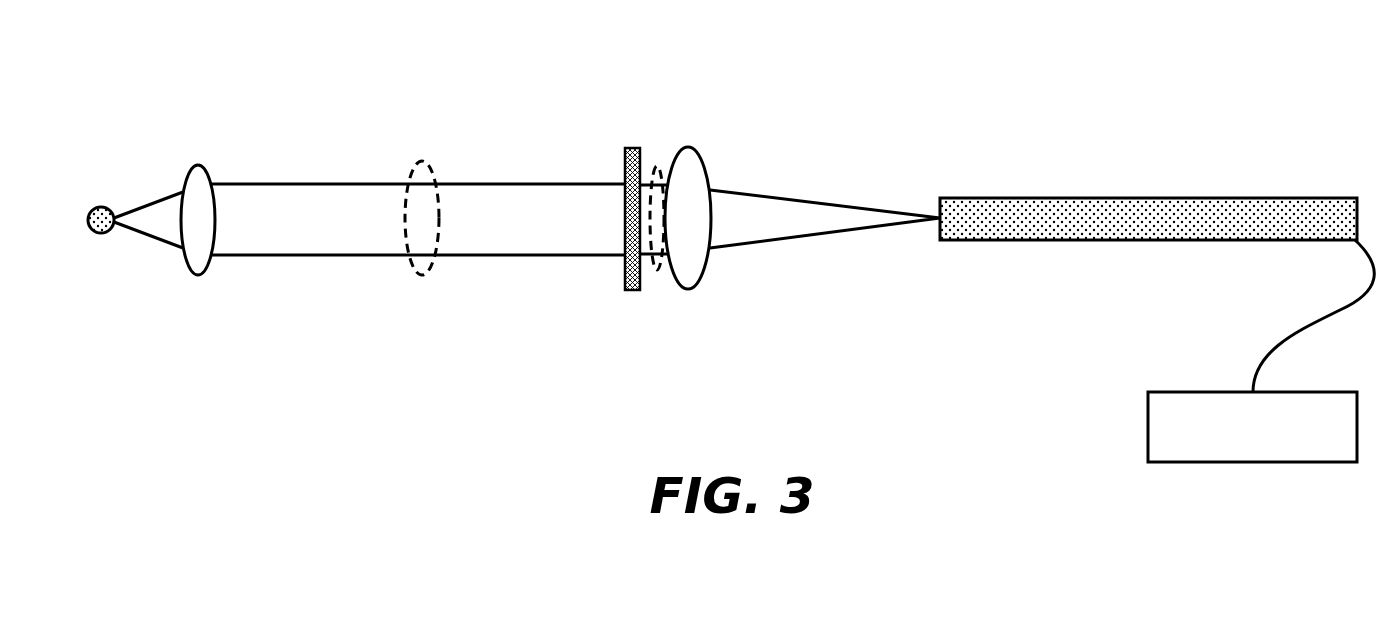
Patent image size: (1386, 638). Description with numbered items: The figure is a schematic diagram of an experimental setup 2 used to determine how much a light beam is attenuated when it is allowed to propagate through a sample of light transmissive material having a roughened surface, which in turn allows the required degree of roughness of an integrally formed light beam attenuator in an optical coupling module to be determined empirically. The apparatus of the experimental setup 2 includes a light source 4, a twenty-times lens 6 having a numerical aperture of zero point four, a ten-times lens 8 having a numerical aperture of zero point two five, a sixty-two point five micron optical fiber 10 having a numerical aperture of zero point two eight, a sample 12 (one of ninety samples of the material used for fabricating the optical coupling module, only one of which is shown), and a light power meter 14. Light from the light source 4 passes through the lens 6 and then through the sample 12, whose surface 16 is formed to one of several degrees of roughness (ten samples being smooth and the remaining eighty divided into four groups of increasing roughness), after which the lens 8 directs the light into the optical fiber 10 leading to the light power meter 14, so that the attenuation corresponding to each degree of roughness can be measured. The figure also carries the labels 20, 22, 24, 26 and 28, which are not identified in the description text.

The experimental setup 2 is at (1170, 70).
The light source 4 is at (103, 235).
The 20× lens 6 is at (199, 273).
The 10× lens 8 is at (700, 270).
The optical fiber 10 is at (1155, 239).
The sample 12 is at (628, 292).
The light power meter 14 is at (1208, 400).
The surface 16 is at (617, 166).
The light beam 20 is at (146, 194).
The optional lens (phantom) 22 is at (421, 160).
The optional element (phantom) 24 is at (655, 168).
The input end 26 is at (942, 190).
The output end 28 is at (1355, 190).